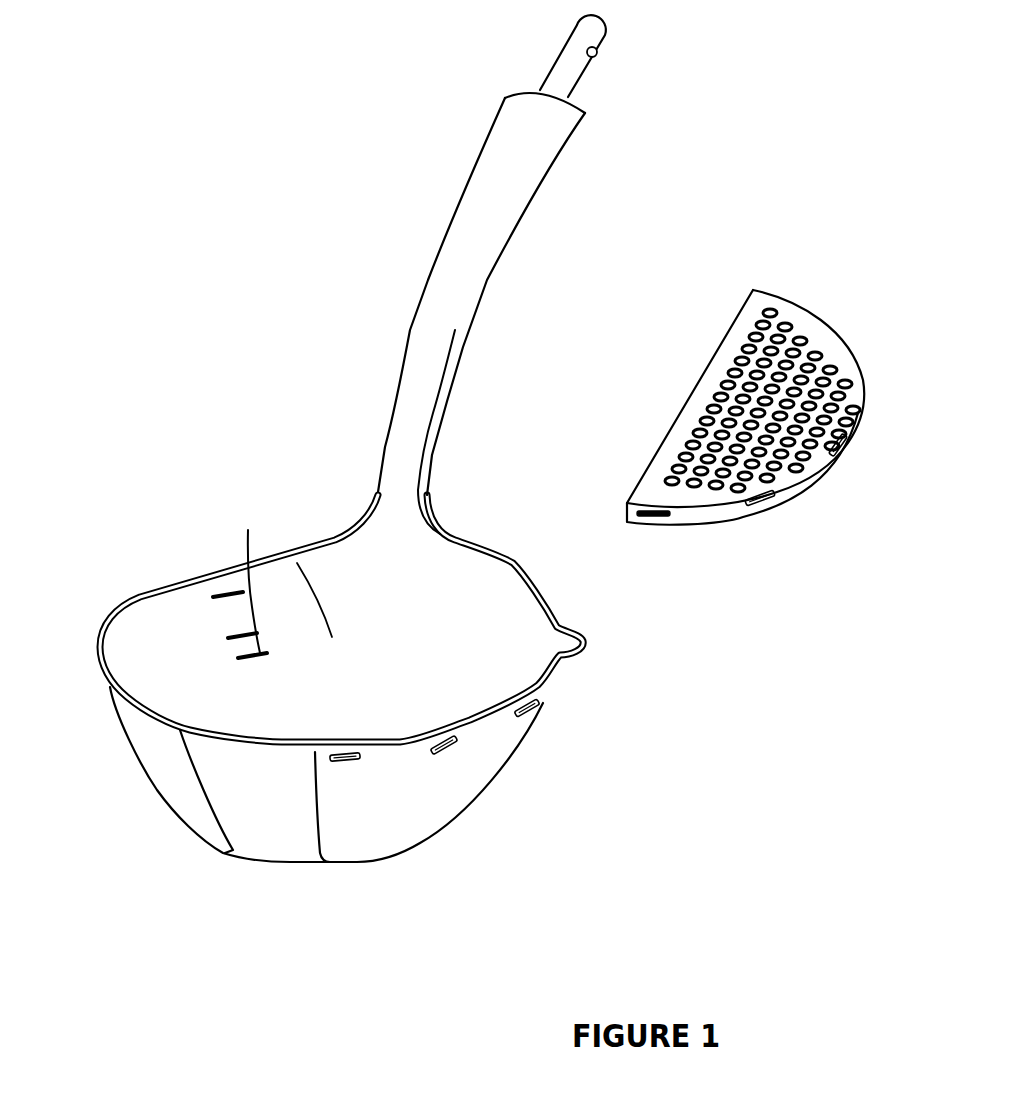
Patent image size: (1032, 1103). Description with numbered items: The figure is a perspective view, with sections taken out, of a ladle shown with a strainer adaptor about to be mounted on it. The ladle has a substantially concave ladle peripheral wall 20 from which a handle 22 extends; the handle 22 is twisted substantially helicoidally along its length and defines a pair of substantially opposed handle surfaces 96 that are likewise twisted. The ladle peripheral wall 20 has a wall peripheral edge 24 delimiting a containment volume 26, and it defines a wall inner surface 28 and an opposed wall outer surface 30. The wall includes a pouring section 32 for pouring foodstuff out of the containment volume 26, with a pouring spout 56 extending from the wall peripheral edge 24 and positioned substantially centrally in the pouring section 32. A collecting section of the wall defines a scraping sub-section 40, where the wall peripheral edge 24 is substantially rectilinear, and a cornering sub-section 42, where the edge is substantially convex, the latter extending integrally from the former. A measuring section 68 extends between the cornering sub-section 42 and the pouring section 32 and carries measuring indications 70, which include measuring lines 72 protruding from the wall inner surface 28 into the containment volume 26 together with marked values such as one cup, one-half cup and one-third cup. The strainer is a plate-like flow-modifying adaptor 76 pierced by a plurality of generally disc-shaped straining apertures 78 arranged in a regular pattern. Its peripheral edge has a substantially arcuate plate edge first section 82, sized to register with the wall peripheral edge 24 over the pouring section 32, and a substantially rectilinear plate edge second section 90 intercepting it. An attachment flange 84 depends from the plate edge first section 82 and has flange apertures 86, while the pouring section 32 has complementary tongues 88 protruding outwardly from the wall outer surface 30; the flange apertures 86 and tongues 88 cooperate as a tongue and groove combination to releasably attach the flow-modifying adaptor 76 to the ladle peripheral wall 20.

The ladle peripheral wall 20 is at (97, 638).
The handle 22 is at (445, 262).
The wall peripheral edge 24 is at (483, 720).
The containment volume 26 is at (263, 698).
The wall inner surface 28 is at (170, 620).
The wall outer surface 30 is at (105, 678).
The pouring section 32 is at (522, 625).
The scraping sub-section 40 is at (277, 807).
The cornering sub-section 42 is at (162, 770).
The pouring spout 56 is at (573, 653).
The measuring section 68 is at (355, 563).
The measuring indications 70 is at (332, 640).
The measuring lines 72 is at (223, 597).
The flow-modifying adaptor 76 is at (827, 337).
The straining apertures 78 is at (833, 385).
The plate edge first section 82 is at (800, 473).
The attachment flange 84 is at (787, 487).
The flange apertures 86 is at (845, 440).
The tongues 88 is at (358, 760).
The plate edge second section 90 is at (697, 380).
The handle surfaces 96 is at (438, 347).